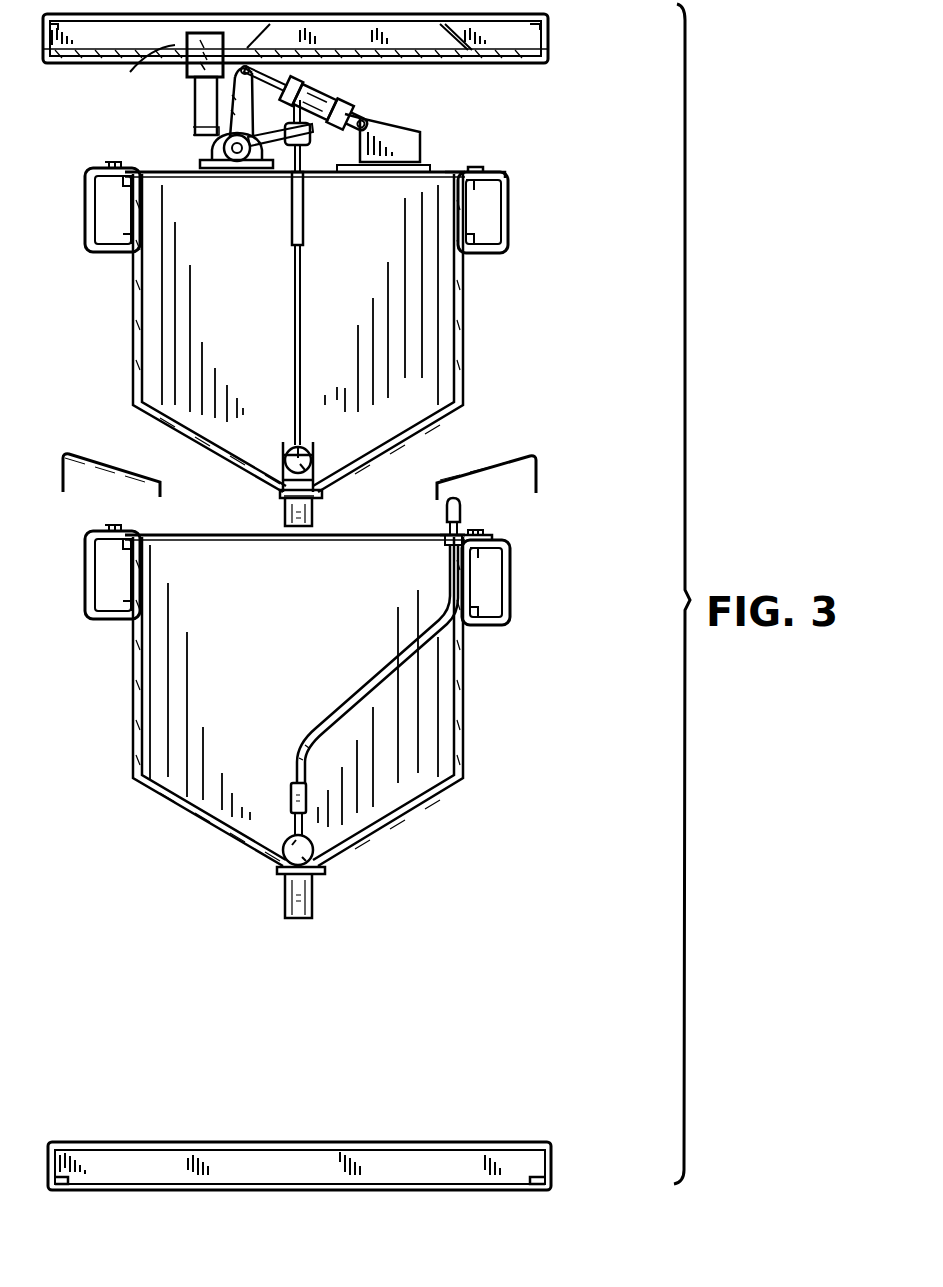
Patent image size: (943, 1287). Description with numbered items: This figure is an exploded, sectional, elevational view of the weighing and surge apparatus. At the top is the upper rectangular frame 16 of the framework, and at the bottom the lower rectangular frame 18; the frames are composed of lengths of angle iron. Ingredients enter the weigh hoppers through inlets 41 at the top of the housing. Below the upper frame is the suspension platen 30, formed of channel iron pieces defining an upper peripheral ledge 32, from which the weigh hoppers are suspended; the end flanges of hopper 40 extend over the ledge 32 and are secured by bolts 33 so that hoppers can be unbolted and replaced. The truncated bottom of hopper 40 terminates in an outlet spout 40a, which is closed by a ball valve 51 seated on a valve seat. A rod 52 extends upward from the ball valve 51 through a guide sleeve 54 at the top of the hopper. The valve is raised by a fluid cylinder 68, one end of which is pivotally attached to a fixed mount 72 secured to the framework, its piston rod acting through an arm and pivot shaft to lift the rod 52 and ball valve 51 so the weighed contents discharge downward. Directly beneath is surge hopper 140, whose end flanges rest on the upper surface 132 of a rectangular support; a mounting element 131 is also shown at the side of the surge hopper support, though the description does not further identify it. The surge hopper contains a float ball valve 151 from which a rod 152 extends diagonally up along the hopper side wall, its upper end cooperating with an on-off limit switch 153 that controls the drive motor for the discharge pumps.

The rectangular frame 16 is at (551, 42).
The rectangular frame 18 is at (553, 1168).
The suspension platen 30 is at (84, 208).
The upper peripheral ledge 32 is at (498, 175).
The bolts 33 is at (477, 167).
The hopper 40 is at (464, 375).
The outlet spout 40a is at (326, 512).
The inlet 41 is at (150, 50).
The ball valve 51 is at (312, 458).
The rod 52 is at (302, 377).
The guide sleeve 54 is at (303, 215).
The fluid cylinder 68 is at (335, 100).
The fixed mount 72 is at (422, 140).
The clip 131 is at (510, 582).
The upper surface 132 is at (496, 546).
The surge hopper 140 is at (466, 714).
The float ball valve 151 is at (285, 843).
The rod 152 is at (336, 706).
The on-off limit switch 153 is at (461, 522).